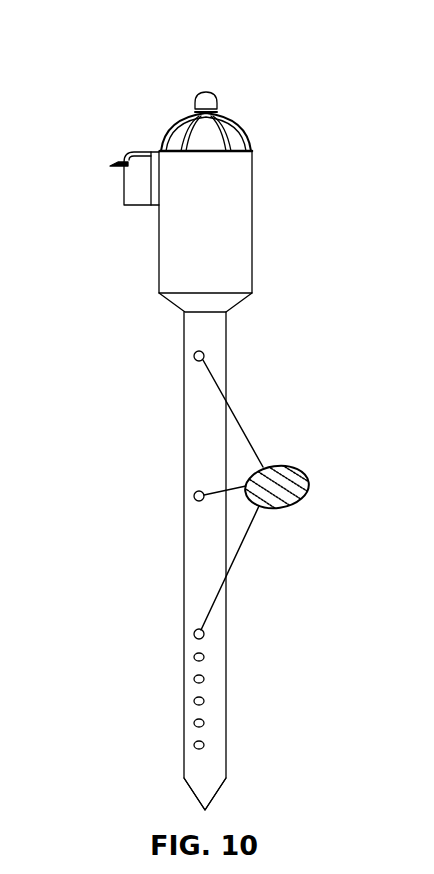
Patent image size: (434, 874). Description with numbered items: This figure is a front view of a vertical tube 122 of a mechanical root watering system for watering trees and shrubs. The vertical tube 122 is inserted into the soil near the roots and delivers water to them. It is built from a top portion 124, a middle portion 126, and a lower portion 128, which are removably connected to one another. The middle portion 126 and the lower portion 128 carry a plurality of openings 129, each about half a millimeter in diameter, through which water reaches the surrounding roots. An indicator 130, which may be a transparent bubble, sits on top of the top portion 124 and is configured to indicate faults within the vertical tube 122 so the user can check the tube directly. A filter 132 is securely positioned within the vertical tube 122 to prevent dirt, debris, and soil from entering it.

The vertical tube 122 is at (152, 70).
The top portion 124 is at (229, 215).
The middle portion 126 is at (196, 458).
The lower portion 128 is at (216, 710).
The openings 129 is at (196, 496).
The indicator 130 is at (204, 92).
The filter 132 is at (282, 470).